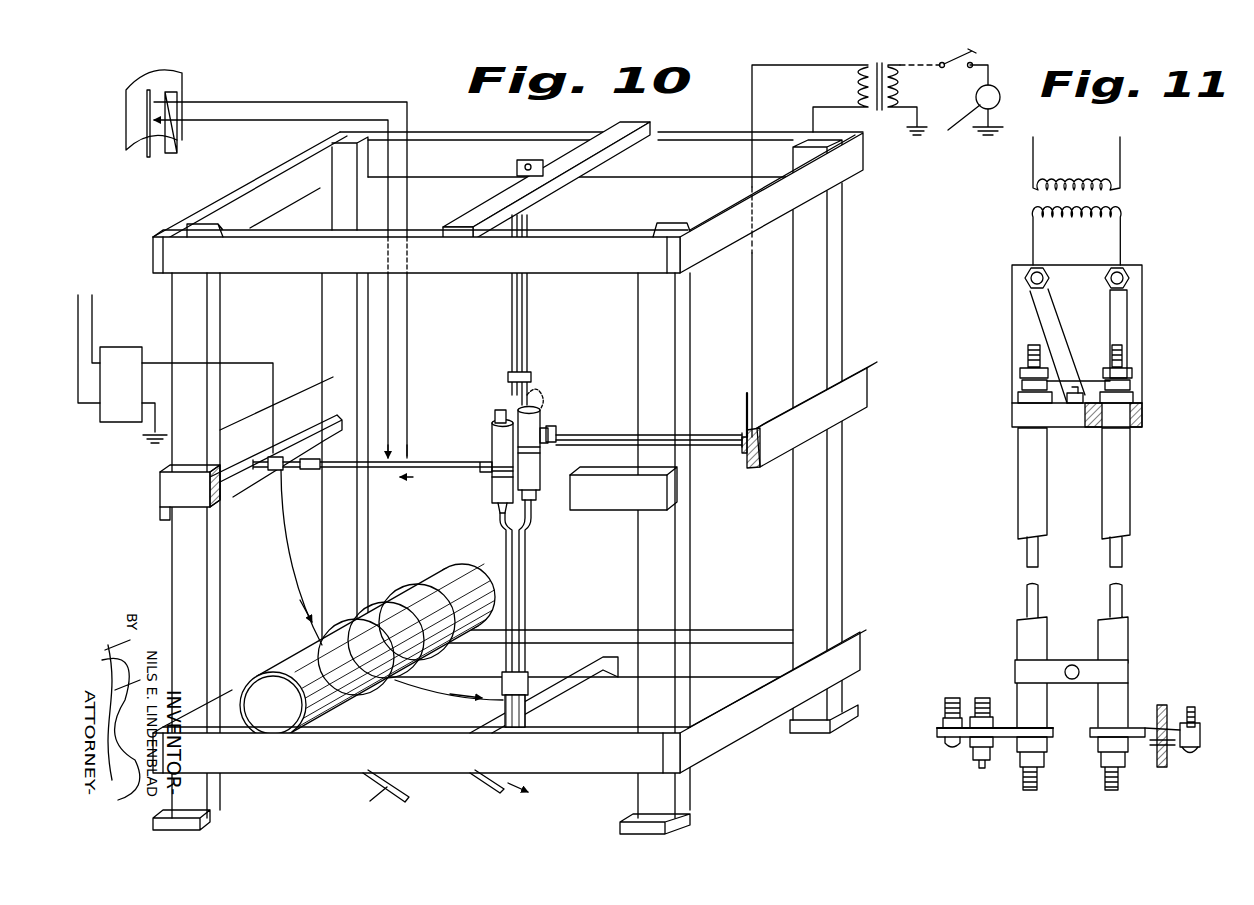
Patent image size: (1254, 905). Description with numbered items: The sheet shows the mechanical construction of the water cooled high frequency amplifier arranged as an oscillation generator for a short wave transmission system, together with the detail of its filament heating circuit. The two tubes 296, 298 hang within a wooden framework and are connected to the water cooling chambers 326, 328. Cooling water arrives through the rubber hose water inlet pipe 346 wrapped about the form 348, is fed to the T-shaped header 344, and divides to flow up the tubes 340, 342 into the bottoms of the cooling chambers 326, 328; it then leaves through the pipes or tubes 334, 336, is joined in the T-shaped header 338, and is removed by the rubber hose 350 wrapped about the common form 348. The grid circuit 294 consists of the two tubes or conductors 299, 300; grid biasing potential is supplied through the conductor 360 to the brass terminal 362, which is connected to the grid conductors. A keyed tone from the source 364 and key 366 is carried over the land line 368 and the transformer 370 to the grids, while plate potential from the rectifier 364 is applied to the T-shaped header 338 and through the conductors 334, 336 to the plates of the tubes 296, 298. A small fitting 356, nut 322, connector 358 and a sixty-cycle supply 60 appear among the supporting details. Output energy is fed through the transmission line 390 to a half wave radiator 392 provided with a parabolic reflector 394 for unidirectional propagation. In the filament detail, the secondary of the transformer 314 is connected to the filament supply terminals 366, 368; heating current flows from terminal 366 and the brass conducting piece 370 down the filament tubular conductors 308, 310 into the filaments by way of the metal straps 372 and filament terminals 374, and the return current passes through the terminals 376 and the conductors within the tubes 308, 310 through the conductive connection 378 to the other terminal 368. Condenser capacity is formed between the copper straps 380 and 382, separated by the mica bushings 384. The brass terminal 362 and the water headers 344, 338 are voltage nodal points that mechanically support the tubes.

In FIG. 10, the alternating current supply 60 is at (95, 336).
In FIG. 10, the grid circuit 294 is at (547, 430).
In FIG. 10, the tube 296 is at (493, 426).
In FIG. 10, the tube 298 is at (541, 428).
In FIG. 10, the conductor 299 is at (627, 430).
In FIG. 10, the conductor 300 is at (628, 443).
In FIG. 10, the filament tubular conductor 308 is at (513, 300).
In FIG. 11, the filament tubular conductor 308 is at (1017, 480).
In FIG. 10, the filament tubular conductor 310 is at (526, 300).
In FIG. 11, the filament tubular conductor 310 is at (1130, 502).
In FIG. 11, the transformer 314 is at (1122, 200).
In FIG. 10, the nut 322 is at (525, 373).
In FIG. 10, the water cooling chamber 326 is at (497, 493).
In FIG. 10, the water cooling chamber 328 is at (538, 477).
In FIG. 10, the tube 334 is at (428, 458).
In FIG. 10, the tube 336 is at (457, 470).
In FIG. 10, the T-shaped header 338 is at (272, 478).
In FIG. 10, the tube 340 is at (507, 547).
In FIG. 10, the tube 342 is at (523, 560).
In FIG. 10, the T-shaped header 344 is at (545, 713).
In FIG. 10, the water inlet pipe 346 is at (410, 800).
In FIG. 10, the form 348 is at (277, 738).
In FIG. 10, the rubber hose 350 is at (290, 537).
In FIG. 10, the fitting 356 is at (523, 668).
In FIG. 10, the connector 358 is at (312, 472).
In FIG. 10, the conductor 360 is at (751, 280).
In FIG. 10, the brass terminal 362 is at (729, 450).
In FIG. 10, the source 364 is at (110, 347).
In FIG. 10, the key 366 is at (978, 56).
In FIG. 11, the key 366 is at (1025, 278).
In FIG. 10, the land line 368 is at (919, 67).
In FIG. 11, the land line 368 is at (1148, 278).
In FIG. 10, the transformer 370 is at (870, 102).
In FIG. 11, the transformer 370 is at (1008, 415).
In FIG. 11, the metal strap 372 is at (1093, 733).
In FIG. 11, the filament terminal 374 is at (945, 708).
In FIG. 11, the terminal 376 is at (980, 700).
In FIG. 11, the conductive connection 378 is at (1095, 370).
In FIG. 11, the copper strap 380 is at (955, 745).
In FIG. 11, the copper strap 382 is at (938, 729).
In FIG. 11, the mica bushing 384 is at (937, 737).
In FIG. 10, the transmission line 390 is at (400, 330).
In FIG. 10, the half wave radiator 392 is at (145, 152).
In FIG. 10, the parabolic reflector 394 is at (180, 140).